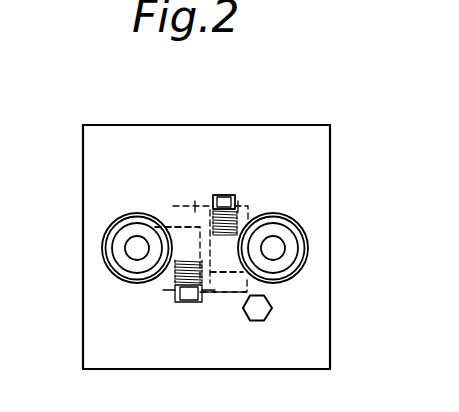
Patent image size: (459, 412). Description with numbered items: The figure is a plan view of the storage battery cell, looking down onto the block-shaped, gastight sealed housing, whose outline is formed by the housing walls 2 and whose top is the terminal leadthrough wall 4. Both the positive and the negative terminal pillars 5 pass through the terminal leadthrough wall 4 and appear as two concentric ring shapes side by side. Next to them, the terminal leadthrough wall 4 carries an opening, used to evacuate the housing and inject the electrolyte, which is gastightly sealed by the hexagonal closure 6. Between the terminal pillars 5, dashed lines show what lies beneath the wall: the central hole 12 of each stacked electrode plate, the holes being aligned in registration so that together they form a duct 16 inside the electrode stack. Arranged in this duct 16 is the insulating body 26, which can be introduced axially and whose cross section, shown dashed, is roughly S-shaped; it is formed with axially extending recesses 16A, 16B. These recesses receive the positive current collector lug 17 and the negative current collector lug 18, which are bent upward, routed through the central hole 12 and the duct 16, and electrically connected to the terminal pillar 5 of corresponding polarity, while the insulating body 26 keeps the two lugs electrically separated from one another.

The housing walls 2 is at (83, 222).
The terminal leadthrough wall 4 is at (122, 155).
The terminal pillars 5 is at (110, 270).
The closure 6 is at (258, 310).
The central hole 12 is at (229, 295).
The duct 16 is at (188, 228).
The axially extending recess 16A is at (220, 270).
The axially extending recess 16B is at (147, 282).
The positive current collector lug 17 is at (249, 207).
The negative current collector lug 18 is at (167, 285).
The insulating body 26 is at (197, 207).